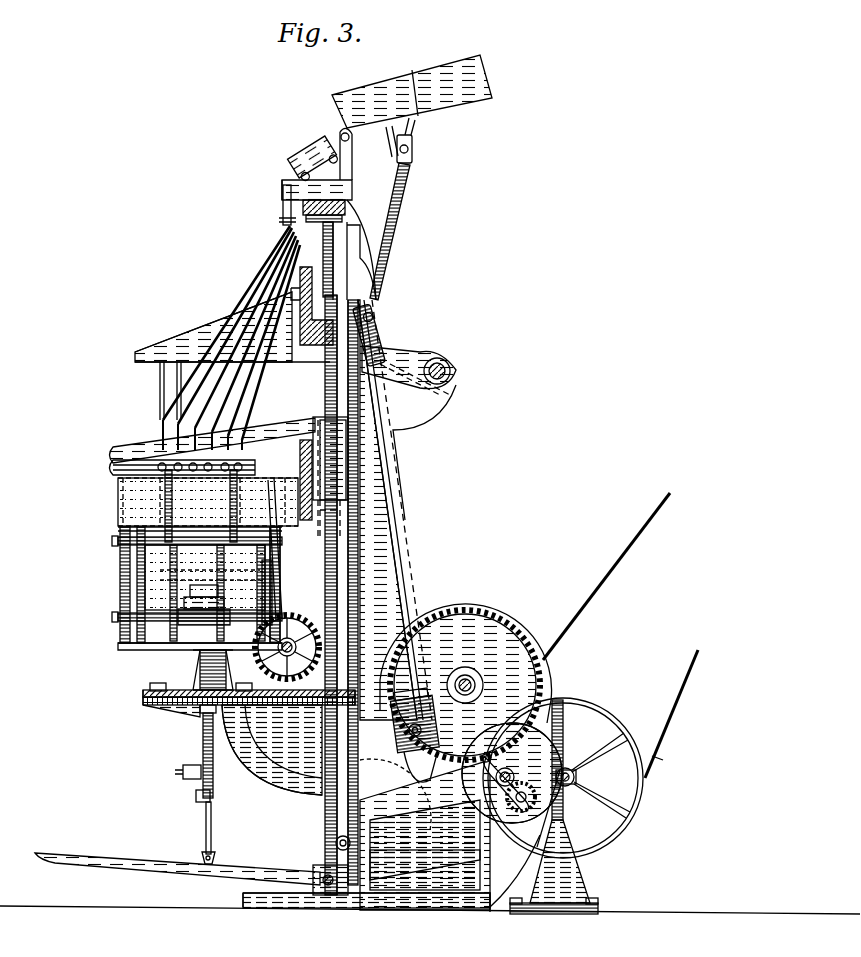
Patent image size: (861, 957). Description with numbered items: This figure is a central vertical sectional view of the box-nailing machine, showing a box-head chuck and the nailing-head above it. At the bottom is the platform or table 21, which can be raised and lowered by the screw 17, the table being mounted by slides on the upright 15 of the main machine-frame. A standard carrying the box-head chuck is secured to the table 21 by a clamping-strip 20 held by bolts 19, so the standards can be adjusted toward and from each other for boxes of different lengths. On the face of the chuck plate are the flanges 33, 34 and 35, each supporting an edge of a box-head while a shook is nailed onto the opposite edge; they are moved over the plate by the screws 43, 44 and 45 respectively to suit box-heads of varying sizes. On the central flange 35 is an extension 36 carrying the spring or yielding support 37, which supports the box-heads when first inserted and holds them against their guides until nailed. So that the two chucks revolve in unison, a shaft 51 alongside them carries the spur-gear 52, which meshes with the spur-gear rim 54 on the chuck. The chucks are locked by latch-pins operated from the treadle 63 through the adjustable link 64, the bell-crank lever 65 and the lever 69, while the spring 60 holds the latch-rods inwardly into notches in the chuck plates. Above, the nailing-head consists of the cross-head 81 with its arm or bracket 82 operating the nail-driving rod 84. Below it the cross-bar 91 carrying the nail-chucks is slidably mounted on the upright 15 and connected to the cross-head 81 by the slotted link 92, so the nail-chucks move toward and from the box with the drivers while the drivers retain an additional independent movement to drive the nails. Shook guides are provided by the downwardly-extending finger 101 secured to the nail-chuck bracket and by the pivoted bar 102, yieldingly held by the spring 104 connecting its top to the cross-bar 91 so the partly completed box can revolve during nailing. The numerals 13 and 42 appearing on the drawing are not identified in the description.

The frame base 13 is at (456, 757).
The upright of the main machine-frame 15 is at (380, 306).
The screw 17 is at (338, 556).
The bolts 19 is at (201, 670).
The clamping-strips 20 is at (150, 690).
The platform or table 21 is at (143, 702).
The flange 33 is at (272, 590).
The flange 34 is at (137, 577).
The central flange 35 is at (220, 618).
The extension 36 is at (176, 643).
The spring or yielding support 37 is at (204, 593).
The guide rod 42 is at (163, 593).
The screw 43 is at (300, 620).
The screw 44 is at (112, 541).
The screw 45 is at (203, 579).
The shaft 51 is at (287, 647).
The spur-gear 52 is at (290, 705).
The spur-gear rim 54 is at (120, 527).
The spring 60 is at (203, 748).
The treadle 63 is at (132, 858).
The adjustable link 64 is at (212, 828).
The bell-crank lever 65 is at (196, 797).
The lever 69 is at (200, 722).
The cross-head 81 is at (378, 340).
The arm or bracket 82 is at (228, 332).
The nail-driving rod 84 is at (182, 392).
The cross-bar 91 is at (346, 462).
The link 92 is at (310, 375).
The fingers 101 is at (201, 511).
The bar 102 is at (296, 432).
The spring 104 is at (300, 418).